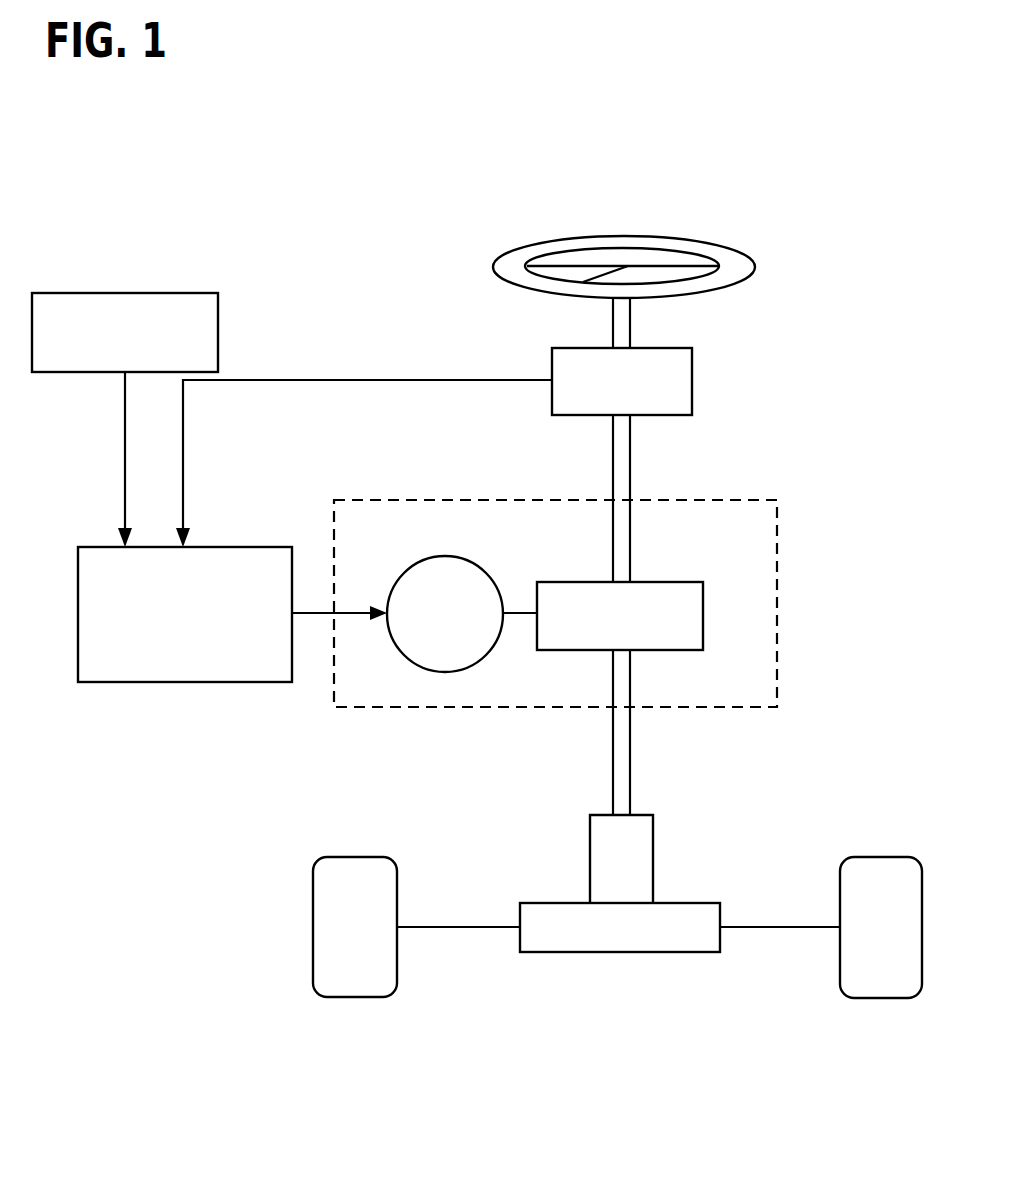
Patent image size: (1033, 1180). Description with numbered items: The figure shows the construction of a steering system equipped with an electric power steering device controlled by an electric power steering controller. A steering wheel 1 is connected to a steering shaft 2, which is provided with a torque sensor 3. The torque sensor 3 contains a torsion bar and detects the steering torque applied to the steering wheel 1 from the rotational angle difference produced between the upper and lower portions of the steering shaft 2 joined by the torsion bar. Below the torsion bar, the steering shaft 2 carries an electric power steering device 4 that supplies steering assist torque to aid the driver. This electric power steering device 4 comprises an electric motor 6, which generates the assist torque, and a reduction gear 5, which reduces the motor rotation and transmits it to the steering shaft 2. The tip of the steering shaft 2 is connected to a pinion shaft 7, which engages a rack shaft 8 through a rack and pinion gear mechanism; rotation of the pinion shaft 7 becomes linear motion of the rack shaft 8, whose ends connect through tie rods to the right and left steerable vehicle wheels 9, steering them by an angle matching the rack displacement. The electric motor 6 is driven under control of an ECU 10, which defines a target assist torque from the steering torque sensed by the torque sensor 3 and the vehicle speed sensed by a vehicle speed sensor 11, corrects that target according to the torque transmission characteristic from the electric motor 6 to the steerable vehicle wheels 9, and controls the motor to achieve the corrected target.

The steering wheel 1 is at (690, 240).
The steering shaft 2 is at (630, 460).
The torque sensor 3 is at (692, 382).
The electric power steering device 4 is at (777, 563).
The reduction gear 5 is at (668, 582).
The electric motor 6 is at (482, 567).
The pinion shaft 7 is at (653, 858).
The rack shaft 8 is at (548, 903).
The steerable vehicle wheels 9 is at (385, 857).
The electronic control unit (ECU) 10 is at (230, 547).
The vehicle speed sensor 11 is at (220, 333).